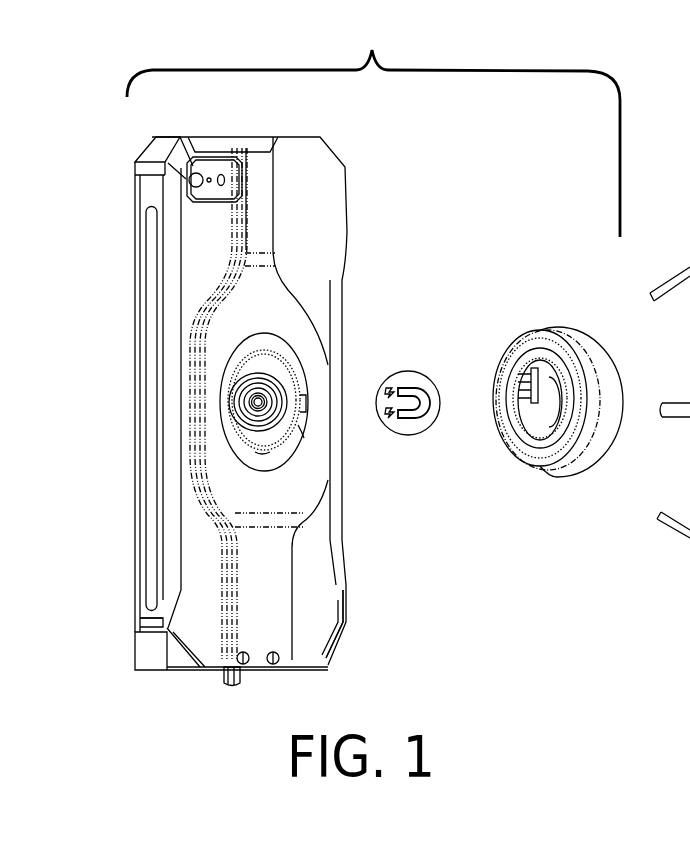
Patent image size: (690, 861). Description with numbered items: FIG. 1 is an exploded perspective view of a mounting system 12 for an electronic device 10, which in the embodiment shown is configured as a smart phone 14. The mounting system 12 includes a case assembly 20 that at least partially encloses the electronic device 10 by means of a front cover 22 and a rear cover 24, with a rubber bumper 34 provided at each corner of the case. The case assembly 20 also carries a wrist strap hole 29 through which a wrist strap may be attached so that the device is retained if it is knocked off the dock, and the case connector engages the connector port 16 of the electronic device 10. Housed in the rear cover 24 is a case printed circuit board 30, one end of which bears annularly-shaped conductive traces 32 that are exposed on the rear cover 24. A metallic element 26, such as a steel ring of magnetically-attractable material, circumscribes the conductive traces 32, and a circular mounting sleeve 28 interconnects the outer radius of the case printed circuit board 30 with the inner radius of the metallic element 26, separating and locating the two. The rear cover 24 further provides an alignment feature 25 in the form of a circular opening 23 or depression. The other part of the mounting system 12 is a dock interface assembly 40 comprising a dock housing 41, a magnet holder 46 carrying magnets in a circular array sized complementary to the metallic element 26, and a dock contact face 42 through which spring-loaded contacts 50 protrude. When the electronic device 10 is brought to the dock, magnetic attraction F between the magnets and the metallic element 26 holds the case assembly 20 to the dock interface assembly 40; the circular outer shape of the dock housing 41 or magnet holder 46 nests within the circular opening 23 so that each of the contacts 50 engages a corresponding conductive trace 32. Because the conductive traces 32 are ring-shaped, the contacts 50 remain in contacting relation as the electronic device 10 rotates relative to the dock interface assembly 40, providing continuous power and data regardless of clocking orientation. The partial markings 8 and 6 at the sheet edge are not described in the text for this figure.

The mounting system 12 is at (373, 128).
The electronic device 10 is at (213, 165).
The smart phone 14 is at (199, 165).
The case assembly 20 is at (347, 193).
The front cover 22 is at (137, 602).
The rear cover 24 is at (153, 620).
The bumper 34 is at (152, 658).
The connector port 16 is at (215, 677).
The wrist strap hole 29 is at (238, 663).
The mounting sleeve 28 is at (252, 362).
The conductive traces 32 is at (288, 405).
The circular opening 23 is at (305, 403).
The alignment feature 25 is at (303, 430).
The case printed circuit board 30 is at (262, 412).
The metallic element 26 is at (262, 458).
The magnetic attraction F is at (410, 372).
The dock interface assembly 40 is at (618, 368).
The dock housing 41 is at (546, 330).
The magnet holder 46 is at (560, 362).
The dock contact face 42 is at (538, 418).
The contacts 50 is at (518, 398).
The adjacent component 8 is at (673, 616).
The adjacent component 6 is at (670, 279).